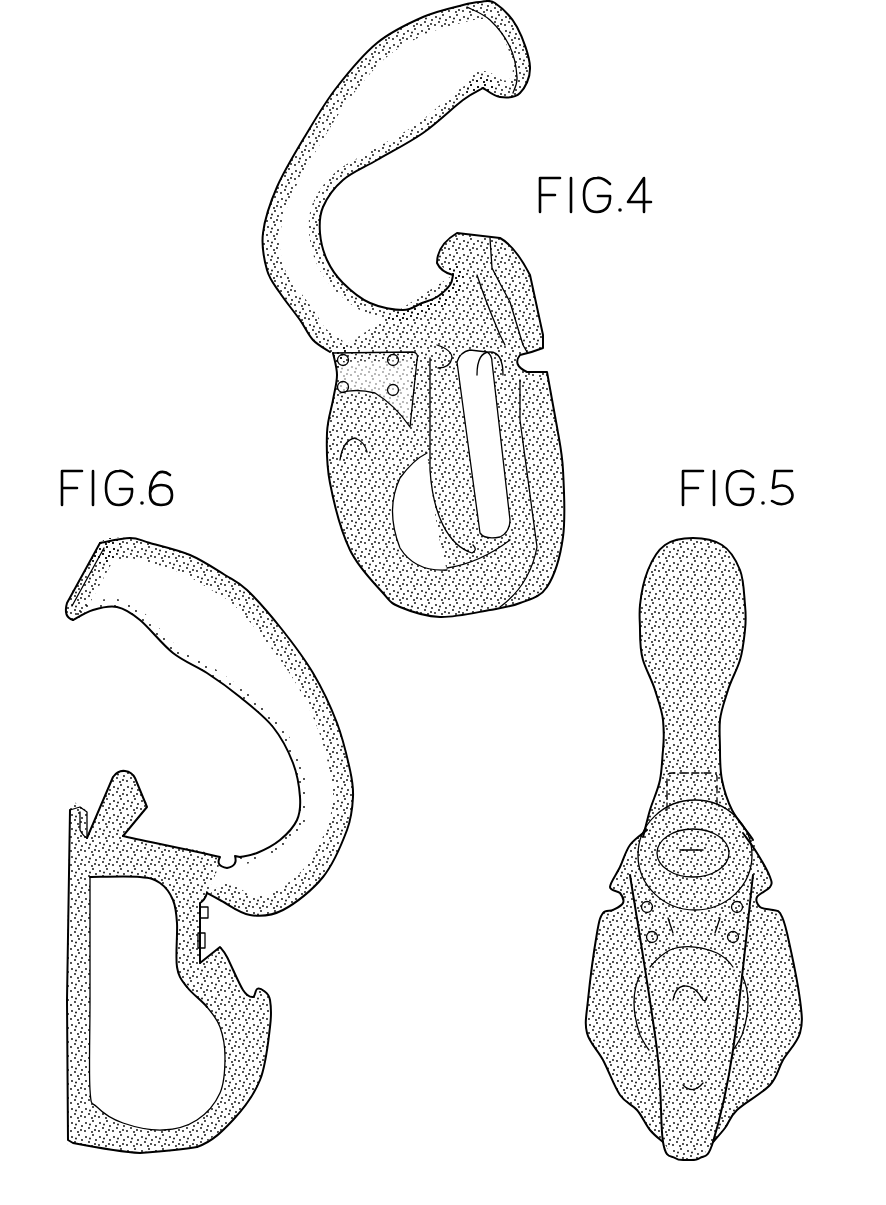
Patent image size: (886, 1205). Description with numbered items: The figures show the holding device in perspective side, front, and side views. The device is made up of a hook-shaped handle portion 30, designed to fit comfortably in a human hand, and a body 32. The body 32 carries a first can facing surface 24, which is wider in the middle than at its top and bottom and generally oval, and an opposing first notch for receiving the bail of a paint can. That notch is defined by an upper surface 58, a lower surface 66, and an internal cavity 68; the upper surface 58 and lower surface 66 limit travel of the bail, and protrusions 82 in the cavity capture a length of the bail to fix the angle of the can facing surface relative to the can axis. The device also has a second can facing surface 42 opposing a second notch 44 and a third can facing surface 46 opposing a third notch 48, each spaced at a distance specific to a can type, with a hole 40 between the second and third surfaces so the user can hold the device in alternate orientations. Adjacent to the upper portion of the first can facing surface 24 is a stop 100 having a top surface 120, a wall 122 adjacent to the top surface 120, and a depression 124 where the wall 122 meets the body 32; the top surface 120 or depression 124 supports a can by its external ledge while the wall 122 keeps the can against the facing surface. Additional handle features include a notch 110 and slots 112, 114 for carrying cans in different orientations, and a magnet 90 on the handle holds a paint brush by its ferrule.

In FIG. 6, the first can facing surface 24 is at (68, 920).
In FIG. 4, the handle portion 30 is at (403, 80).
In FIG. 6, the handle portion 30 is at (204, 616).
In FIG. 6, the body 32 is at (183, 873).
In FIG. 6, the hole 40 is at (158, 1016).
In FIG. 5, the second can facing surface 42 is at (633, 855).
In FIG. 4, the second notch 44 is at (542, 355).
In FIG. 5, the second notch 44 is at (773, 897).
In FIG. 5, the third can facing surface 46 is at (765, 868).
In FIG. 5, the third notch 48 is at (612, 896).
In FIG. 6, the upper surface 58 is at (200, 855).
In FIG. 6, the lower surface 66 is at (190, 983).
In FIG. 4, the internal cavity 68 is at (335, 383).
In FIG. 6, the internal cavity 68 is at (205, 930).
In FIG. 4, the protrusions 82 is at (335, 357).
In FIG. 5, the protrusions 82 is at (777, 943).
In FIG. 6, the protrusions 82 is at (213, 913).
In FIG. 6, the magnet 90 is at (93, 570).
In FIG. 6, the stop 100 is at (108, 755).
In FIG. 6, the notch 110 is at (237, 855).
In FIG. 6, the slot 112 is at (247, 990).
In FIG. 6, the slot 114 is at (128, 828).
In FIG. 6, the top surface 120 is at (78, 823).
In FIG. 6, the wall 122 is at (90, 830).
In FIG. 6, the depression 124 is at (108, 775).